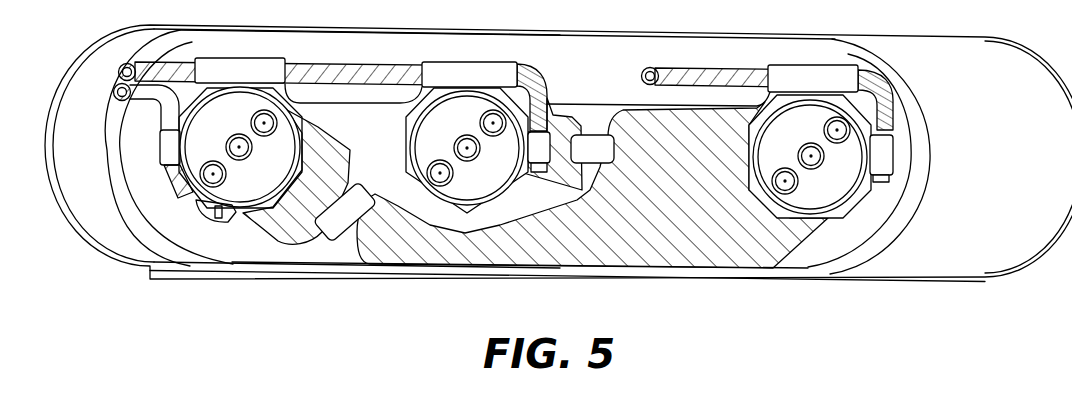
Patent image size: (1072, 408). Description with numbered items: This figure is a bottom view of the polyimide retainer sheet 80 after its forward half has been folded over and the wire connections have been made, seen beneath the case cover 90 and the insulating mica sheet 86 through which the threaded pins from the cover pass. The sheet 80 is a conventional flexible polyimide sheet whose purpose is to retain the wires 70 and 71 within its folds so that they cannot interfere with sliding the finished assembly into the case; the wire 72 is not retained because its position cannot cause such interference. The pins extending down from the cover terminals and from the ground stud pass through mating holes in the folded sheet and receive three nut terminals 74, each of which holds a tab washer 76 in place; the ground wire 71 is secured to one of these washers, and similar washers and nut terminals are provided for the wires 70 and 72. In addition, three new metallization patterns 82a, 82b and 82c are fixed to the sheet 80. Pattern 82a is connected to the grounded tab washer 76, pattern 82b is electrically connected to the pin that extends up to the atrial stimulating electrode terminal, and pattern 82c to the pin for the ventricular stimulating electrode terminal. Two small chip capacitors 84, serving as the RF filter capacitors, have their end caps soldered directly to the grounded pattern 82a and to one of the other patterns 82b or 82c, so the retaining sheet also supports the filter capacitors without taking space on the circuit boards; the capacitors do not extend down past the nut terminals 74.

The wire 70 is at (362, 46).
The ground wire 71 is at (716, 48).
The wire 72 is at (138, 101).
The nut terminal 74 is at (422, 148).
The tab washer 76 is at (230, 208).
The polyimide retainer sheet 80 is at (893, 191).
The metallization pattern 82a is at (637, 255).
The metallization pattern 82b is at (295, 230).
The metallization pattern 82c is at (557, 127).
The chip capacitor 84 is at (350, 206).
The mica sheet 86 is at (924, 125).
The case cover 90 is at (906, 14).